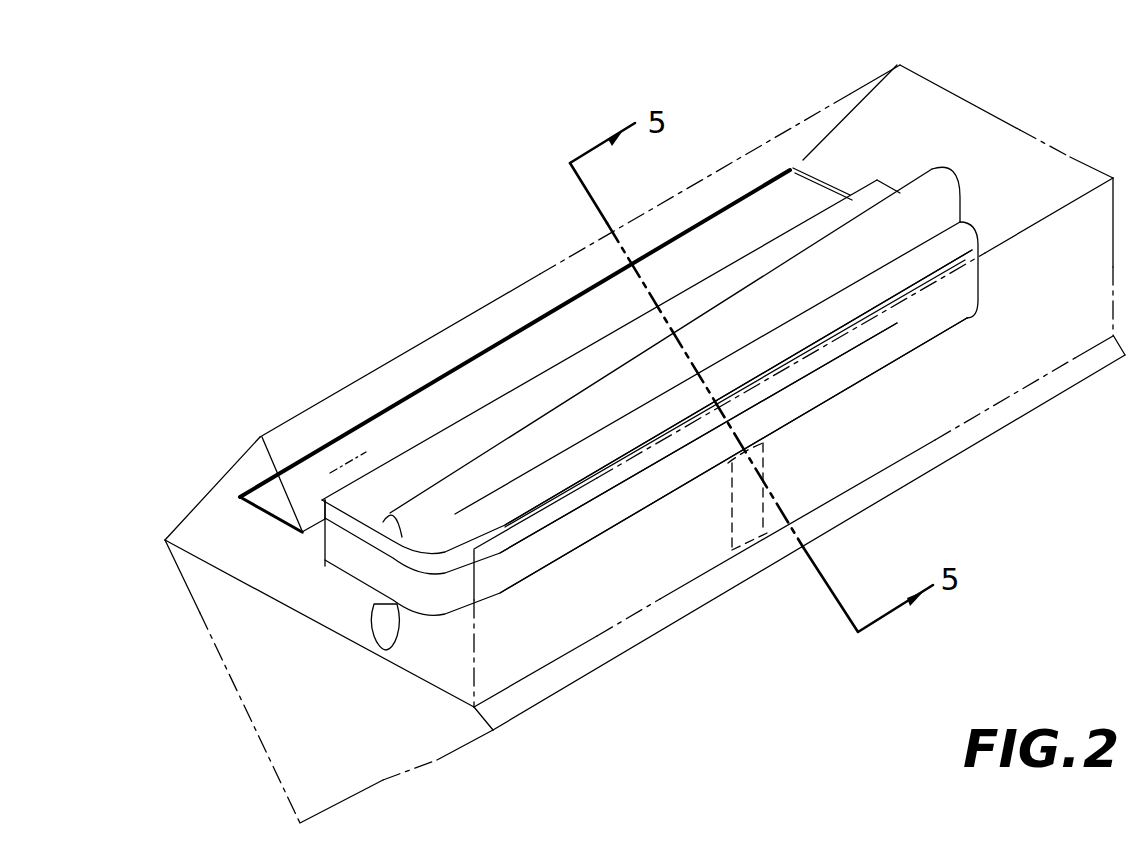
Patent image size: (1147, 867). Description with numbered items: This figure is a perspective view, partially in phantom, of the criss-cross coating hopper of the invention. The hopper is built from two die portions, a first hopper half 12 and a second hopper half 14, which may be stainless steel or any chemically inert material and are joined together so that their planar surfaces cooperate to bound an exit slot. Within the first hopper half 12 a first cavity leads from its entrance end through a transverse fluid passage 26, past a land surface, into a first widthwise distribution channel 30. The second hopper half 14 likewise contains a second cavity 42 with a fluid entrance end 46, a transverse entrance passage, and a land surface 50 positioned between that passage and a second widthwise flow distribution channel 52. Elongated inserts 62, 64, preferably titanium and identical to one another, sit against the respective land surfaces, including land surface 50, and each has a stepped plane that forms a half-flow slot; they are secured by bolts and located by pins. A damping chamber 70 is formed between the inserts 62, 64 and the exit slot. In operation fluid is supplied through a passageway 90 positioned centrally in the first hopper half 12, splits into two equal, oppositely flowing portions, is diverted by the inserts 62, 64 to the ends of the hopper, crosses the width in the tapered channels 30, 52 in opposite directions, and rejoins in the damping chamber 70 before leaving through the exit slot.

The first hopper half 12 is at (243, 706).
The second hopper half 14 is at (192, 516).
The transverse fluid passage 26 is at (968, 318).
The first widthwise distribution channel 30 is at (390, 648).
The second cavity 42 is at (365, 520).
The fluid entrance end 46 is at (970, 235).
The land surface 50 is at (837, 313).
The second widthwise flow distribution channel 52 is at (793, 270).
The elongated insert 62 is at (357, 588).
The elongated insert 64 is at (330, 542).
The damping chamber 70 is at (314, 522).
The passageway 90 is at (840, 548).